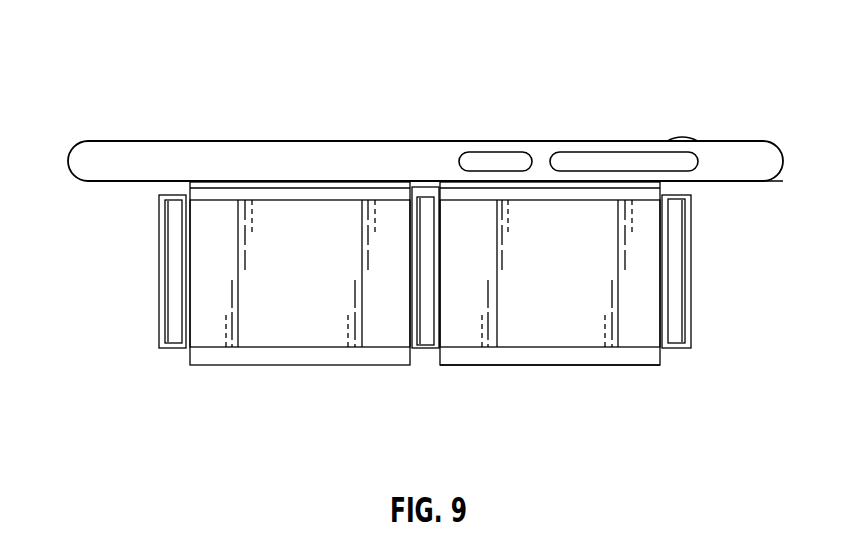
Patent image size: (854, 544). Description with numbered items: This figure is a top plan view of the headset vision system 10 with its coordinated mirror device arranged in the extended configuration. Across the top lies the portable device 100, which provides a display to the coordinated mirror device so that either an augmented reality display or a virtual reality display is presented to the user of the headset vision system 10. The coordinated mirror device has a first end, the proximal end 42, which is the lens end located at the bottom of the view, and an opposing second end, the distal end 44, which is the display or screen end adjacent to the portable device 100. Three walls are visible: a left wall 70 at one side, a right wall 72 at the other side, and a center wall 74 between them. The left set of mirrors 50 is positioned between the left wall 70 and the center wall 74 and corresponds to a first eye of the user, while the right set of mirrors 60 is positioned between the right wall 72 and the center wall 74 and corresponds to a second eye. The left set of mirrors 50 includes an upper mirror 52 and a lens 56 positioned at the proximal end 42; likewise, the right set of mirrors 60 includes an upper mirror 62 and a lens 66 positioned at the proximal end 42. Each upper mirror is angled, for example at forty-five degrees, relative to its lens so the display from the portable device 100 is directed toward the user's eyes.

The headset vision system 10 is at (112, 52).
The portable device 100 is at (520, 123).
The proximal end 42 is at (652, 369).
The distal end 44 is at (680, 186).
The left set of mirrors 50 is at (140, 287).
The upper mirror 52 is at (303, 213).
The lens 56 is at (259, 355).
The right set of mirrors 60 is at (707, 297).
The upper mirror 62 is at (645, 213).
The lens 66 is at (497, 355).
The left wall 70 is at (173, 237).
The right wall 72 is at (677, 242).
The center wall 74 is at (423, 223).